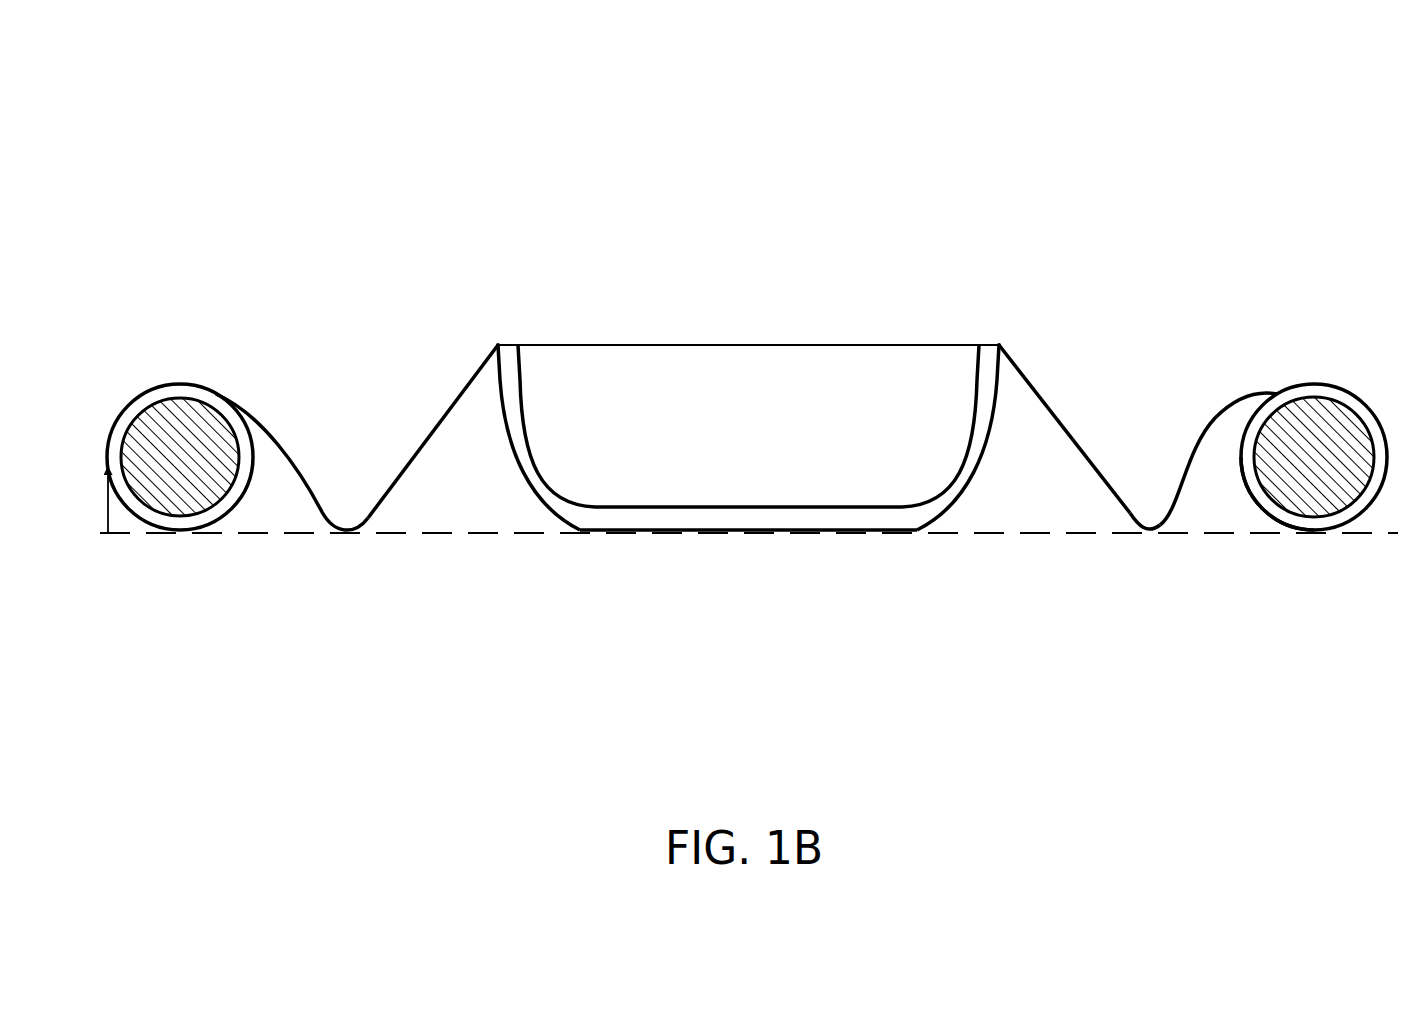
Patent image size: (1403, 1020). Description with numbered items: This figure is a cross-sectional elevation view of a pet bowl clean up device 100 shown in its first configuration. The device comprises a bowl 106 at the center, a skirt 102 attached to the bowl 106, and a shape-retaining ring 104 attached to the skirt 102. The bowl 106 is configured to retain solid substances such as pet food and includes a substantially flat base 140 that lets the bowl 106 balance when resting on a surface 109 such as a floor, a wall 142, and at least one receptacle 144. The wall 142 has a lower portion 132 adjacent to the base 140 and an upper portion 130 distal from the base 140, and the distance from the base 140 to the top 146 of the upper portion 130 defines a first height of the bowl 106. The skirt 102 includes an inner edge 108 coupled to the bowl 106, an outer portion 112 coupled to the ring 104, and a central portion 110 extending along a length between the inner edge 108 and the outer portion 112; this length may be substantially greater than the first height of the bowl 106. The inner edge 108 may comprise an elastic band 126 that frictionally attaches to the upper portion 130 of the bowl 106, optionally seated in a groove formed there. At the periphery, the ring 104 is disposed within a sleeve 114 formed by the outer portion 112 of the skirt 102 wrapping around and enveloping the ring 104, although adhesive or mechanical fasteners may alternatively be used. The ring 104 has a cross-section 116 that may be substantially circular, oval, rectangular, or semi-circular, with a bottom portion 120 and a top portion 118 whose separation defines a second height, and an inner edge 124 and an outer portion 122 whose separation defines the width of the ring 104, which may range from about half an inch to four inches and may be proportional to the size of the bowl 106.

The pet bowl clean up device 100 is at (1070, 99).
The skirt 102 is at (1080, 424).
The ring 104 is at (1354, 344).
The bowl 106 is at (497, 316).
The inner edge 108 is at (1014, 349).
The surface 109 is at (444, 540).
The central portion 110 is at (1057, 470).
The outer portion 112 is at (1239, 388).
The sleeve 114 is at (1281, 535).
The cross-section 116 is at (1322, 510).
The top portion 118 is at (192, 381).
The bottom portion 120 is at (192, 536).
The outer portion 122 is at (118, 519).
The inner edge 124 is at (260, 463).
The elastic band 126 is at (999, 337).
The upper portion 130 is at (496, 405).
The lower portion 132 is at (532, 505).
The base 140 is at (763, 534).
The wall 142 is at (960, 420).
The receptacle 144 is at (595, 329).
The top 146 is at (494, 343).